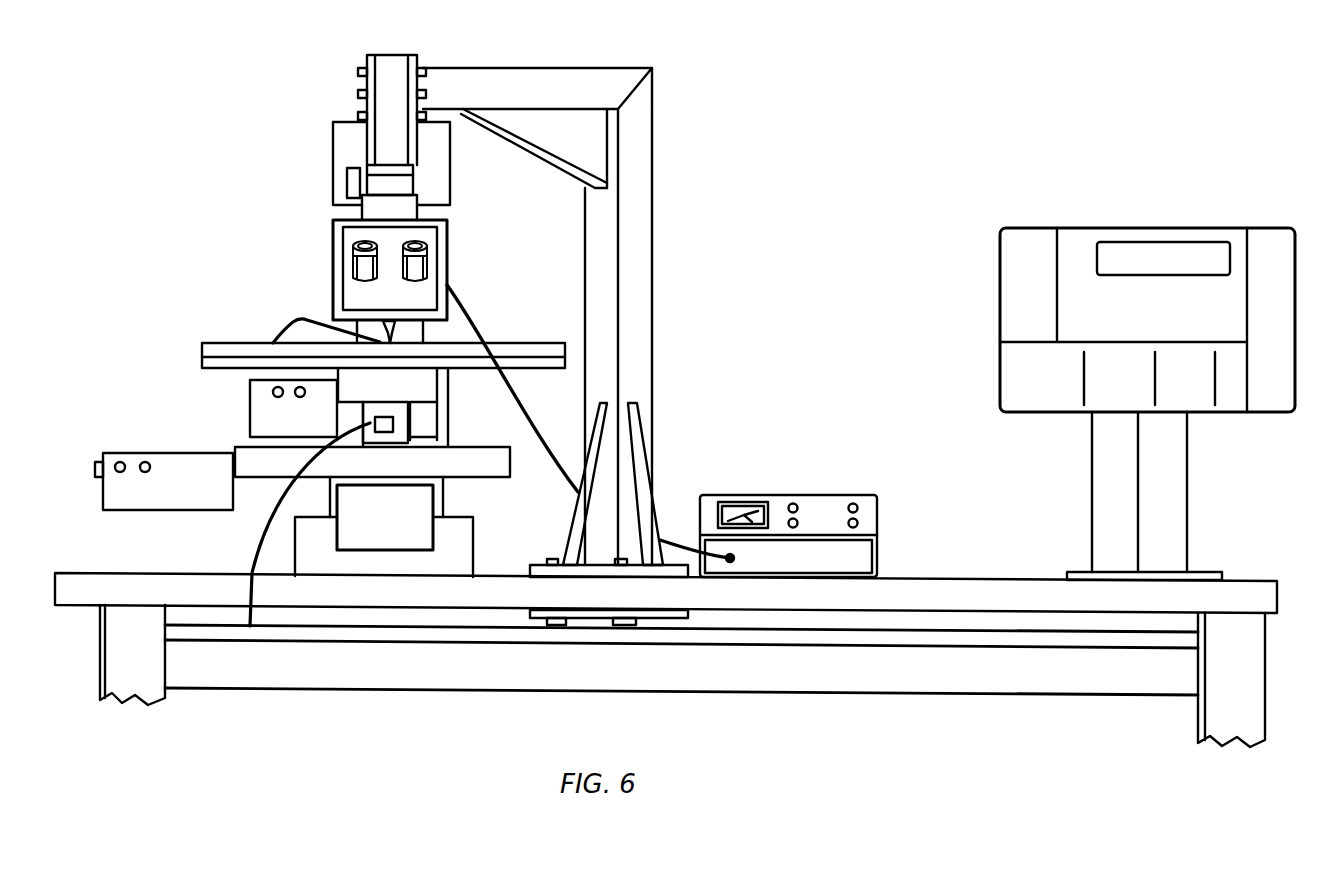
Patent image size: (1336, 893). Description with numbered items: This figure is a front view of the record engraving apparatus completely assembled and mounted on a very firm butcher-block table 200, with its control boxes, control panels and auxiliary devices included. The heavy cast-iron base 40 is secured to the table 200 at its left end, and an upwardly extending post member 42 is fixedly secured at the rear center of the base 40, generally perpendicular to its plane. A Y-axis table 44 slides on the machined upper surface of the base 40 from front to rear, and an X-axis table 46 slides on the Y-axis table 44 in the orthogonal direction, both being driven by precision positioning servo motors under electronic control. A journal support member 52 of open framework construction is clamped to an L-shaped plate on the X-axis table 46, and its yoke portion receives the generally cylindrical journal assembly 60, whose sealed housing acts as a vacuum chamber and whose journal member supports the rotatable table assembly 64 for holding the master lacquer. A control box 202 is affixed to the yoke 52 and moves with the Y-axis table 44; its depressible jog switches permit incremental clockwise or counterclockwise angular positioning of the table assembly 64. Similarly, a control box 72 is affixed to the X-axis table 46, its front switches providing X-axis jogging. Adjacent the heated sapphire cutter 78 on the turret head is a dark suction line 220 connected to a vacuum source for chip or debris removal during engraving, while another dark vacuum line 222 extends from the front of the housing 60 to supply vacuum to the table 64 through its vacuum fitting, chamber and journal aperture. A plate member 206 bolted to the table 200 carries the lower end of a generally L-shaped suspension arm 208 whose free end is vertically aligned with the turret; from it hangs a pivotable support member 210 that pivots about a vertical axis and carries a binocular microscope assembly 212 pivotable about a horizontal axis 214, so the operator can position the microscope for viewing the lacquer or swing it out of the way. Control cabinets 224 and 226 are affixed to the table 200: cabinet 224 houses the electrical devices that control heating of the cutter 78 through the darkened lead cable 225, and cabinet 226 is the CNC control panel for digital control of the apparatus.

The base 40 is at (472, 538).
The post member 42 is at (413, 337).
The Y-axis table 44 is at (394, 527).
The X-axis table 46 is at (394, 473).
The journal support member 52 is at (425, 392).
The journal assembly 60 is at (425, 425).
The rotatable table assembly 64 is at (214, 342).
The control box 72 is at (126, 452).
The heated sapphire cutter 78 is at (397, 325).
The table 200 is at (118, 572).
The control box 202 is at (250, 412).
The plate member 206 is at (647, 560).
The suspension arm 208 is at (658, 202).
The pivotable support member 210 is at (388, 85).
The binocular microscope assembly 212 is at (430, 213).
The horizontal axis 214 is at (420, 147).
The suction line 220 is at (293, 322).
The vacuum line 222 is at (250, 550).
The control cabinet 224 is at (795, 494).
The lead cable 225 is at (522, 416).
The control cabinet 226 is at (1000, 290).